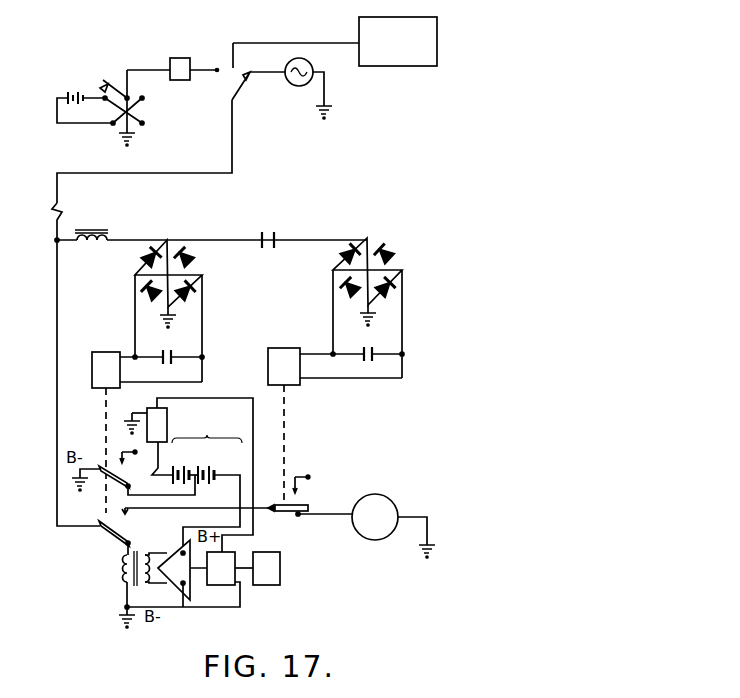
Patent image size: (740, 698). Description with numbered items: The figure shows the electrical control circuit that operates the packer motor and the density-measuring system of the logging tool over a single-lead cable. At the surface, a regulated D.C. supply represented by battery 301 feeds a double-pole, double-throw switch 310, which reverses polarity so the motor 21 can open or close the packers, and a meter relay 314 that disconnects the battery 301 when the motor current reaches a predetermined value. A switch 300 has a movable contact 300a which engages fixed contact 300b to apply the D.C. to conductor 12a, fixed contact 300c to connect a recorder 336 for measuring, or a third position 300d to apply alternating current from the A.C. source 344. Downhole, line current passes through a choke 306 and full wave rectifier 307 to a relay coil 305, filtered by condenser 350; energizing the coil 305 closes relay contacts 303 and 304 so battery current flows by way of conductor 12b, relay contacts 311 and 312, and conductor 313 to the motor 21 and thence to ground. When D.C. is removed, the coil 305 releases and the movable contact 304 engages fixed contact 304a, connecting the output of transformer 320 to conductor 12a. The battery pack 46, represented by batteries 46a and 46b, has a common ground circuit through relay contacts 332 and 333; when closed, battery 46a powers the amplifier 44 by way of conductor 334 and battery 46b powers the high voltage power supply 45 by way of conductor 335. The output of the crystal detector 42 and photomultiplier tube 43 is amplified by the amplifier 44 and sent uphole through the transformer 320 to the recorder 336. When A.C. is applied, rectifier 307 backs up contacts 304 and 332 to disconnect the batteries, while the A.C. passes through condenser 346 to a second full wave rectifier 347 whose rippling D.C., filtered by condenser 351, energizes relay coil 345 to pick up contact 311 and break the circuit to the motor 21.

The conductor 12a is at (232, 152).
The conductor 12b is at (57, 403).
The motor 21 is at (393, 526).
The crystal detector 42 is at (266, 568).
The photomultiplier tube 43 is at (230, 568).
The amplifier 44 is at (182, 573).
The high voltage power supply 45 is at (148, 412).
The battery pack 46 is at (207, 436).
The battery 46a is at (220, 461).
The battery 46b is at (184, 461).
The switch 300 is at (250, 111).
The movable contact 300a is at (264, 97).
The fixed contact 300b is at (217, 70).
The fixed contact 300c is at (233, 70).
The third position 300d is at (264, 59).
The battery 301 is at (68, 93).
The relay contact 303 is at (128, 522).
The relay contact 304 is at (108, 536).
The fixed contact 304a is at (130, 544).
The relay coil 305 is at (104, 352).
The choke 306 is at (100, 232).
The full wave rectifier 307 is at (203, 264).
The double-pole, double-throw switch 310 is at (165, 111).
The relay contact 311 is at (291, 515).
The relay contact 312 is at (300, 513).
The conductor 313 is at (328, 516).
The meter relay 314 is at (178, 60).
The transformer 320 is at (122, 571).
The relay contact 332 is at (110, 468).
The relay contact 333 is at (123, 487).
The conductor 334 is at (240, 489).
The conductor 335 is at (161, 486).
The recorder 336 is at (335, 41).
The A.C. source 344 is at (312, 62).
The relay coil 345 is at (285, 353).
The condenser 346 is at (270, 232).
The full wave rectifier 347 is at (398, 262).
The condenser 350 is at (164, 361).
The condenser 351 is at (363, 359).